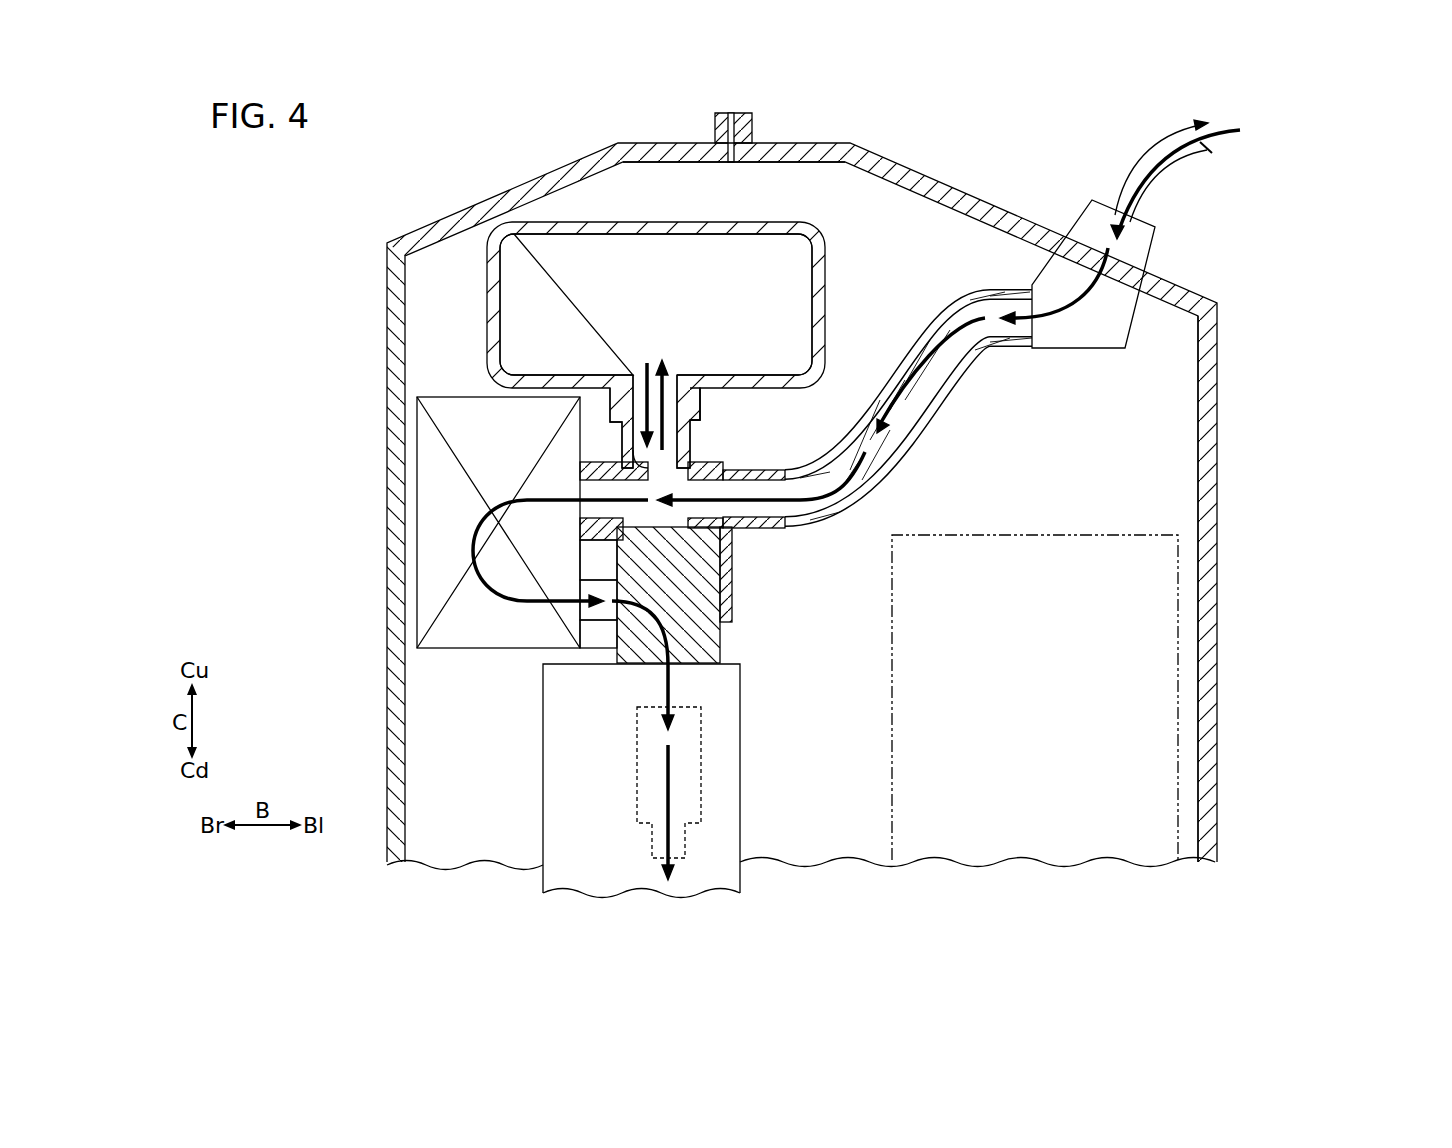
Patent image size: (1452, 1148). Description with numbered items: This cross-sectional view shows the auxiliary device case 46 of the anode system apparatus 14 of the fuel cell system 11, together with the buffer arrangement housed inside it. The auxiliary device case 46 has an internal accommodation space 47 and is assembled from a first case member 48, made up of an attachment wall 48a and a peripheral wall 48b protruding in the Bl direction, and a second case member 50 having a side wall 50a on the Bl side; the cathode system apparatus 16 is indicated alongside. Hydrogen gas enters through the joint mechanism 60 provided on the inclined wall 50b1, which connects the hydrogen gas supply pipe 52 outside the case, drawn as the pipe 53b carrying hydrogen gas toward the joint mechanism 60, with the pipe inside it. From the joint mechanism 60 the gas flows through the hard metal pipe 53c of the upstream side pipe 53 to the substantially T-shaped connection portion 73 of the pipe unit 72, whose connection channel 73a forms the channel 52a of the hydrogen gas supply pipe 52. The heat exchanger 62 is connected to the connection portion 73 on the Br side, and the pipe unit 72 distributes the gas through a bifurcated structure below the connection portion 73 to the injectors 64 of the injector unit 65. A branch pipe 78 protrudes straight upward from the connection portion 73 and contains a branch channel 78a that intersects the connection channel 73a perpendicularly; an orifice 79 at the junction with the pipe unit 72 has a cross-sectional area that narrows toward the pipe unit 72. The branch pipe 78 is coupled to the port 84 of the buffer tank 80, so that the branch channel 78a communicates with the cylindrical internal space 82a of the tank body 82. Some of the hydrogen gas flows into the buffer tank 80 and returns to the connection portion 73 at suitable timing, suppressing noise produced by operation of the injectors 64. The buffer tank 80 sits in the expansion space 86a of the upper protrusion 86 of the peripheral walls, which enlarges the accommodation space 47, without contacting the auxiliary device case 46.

The fuel cell system 11 is at (1118, 697).
The anode system apparatus 14 is at (447, 258).
The cathode system apparatus 16 is at (1184, 593).
The auxiliary device case 46 is at (808, 482).
The accommodation space 47 is at (1178, 457).
The first case member 48 is at (450, 502).
The attachment wall 48a is at (398, 382).
The peripheral wall 48b is at (503, 190).
The second case member 50 is at (1091, 502).
The side wall 50a is at (1210, 432).
The inclined wall 50b1 is at (1183, 292).
The hydrogen gas supply pipe 52 is at (912, 406).
The channel 52a is at (865, 457).
The upstream side pipe 53 is at (998, 309).
The hydrogen inlet piping 53b is at (1155, 157).
The metal pipe 53c is at (928, 398).
The joint mechanism 60 is at (1088, 348).
The heat exchanger 62 is at (485, 522).
The injector 64 is at (698, 757).
The injector unit 65 is at (641, 781).
The pipe unit 72 is at (733, 646).
The connection portion 73 is at (551, 517).
The connection channel 73a is at (612, 490).
The branch pipe 78 is at (697, 405).
The branch channel 78a is at (641, 390).
The orifice 79 is at (645, 468).
The buffer tank 80 is at (768, 153).
The tank body 82 is at (685, 324).
The internal space 82a is at (706, 245).
The port 84 is at (700, 412).
The upper protrusion 86 is at (658, 144).
The expansion space 86a is at (590, 196).